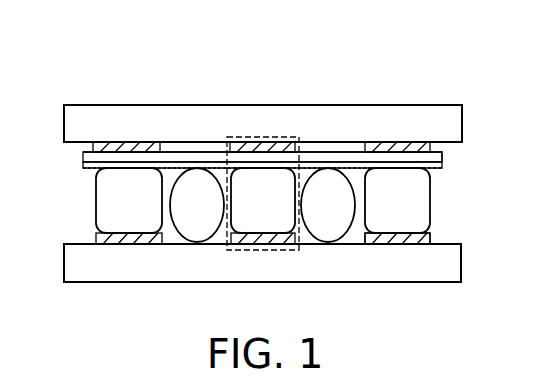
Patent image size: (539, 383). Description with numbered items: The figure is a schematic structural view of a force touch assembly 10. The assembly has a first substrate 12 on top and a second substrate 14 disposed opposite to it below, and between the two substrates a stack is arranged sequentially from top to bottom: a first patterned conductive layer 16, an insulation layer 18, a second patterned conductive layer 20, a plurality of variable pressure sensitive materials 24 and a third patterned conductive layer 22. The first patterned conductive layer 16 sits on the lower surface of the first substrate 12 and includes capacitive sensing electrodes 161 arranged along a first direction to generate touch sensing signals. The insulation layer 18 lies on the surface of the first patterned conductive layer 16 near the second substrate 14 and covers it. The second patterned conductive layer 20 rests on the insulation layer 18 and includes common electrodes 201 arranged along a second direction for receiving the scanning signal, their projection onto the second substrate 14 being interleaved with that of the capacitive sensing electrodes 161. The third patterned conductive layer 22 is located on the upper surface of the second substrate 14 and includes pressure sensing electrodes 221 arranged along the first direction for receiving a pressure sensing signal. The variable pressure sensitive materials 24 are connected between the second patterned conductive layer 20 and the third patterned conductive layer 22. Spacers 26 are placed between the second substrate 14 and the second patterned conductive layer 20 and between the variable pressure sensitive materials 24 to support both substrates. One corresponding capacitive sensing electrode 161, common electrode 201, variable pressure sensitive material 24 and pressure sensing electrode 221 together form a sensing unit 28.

The force touch assembly 10 is at (42, 78).
The first substrate 12 is at (305, 118).
The second substrate 14 is at (447, 262).
The first patterned conductive layer 16 is at (92, 150).
The capacitive sensing electrodes 161 is at (137, 142).
The insulation layer 18 is at (440, 157).
The second patterned conductive layer 20 is at (83, 168).
The common electrodes 201 is at (437, 167).
The third patterned conductive layer 22 is at (95, 238).
The pressure sensing electrodes 221 is at (425, 238).
The variable pressure sensitive materials 24 is at (420, 203).
The spacers 26 is at (188, 176).
The sensing unit 28 is at (261, 137).